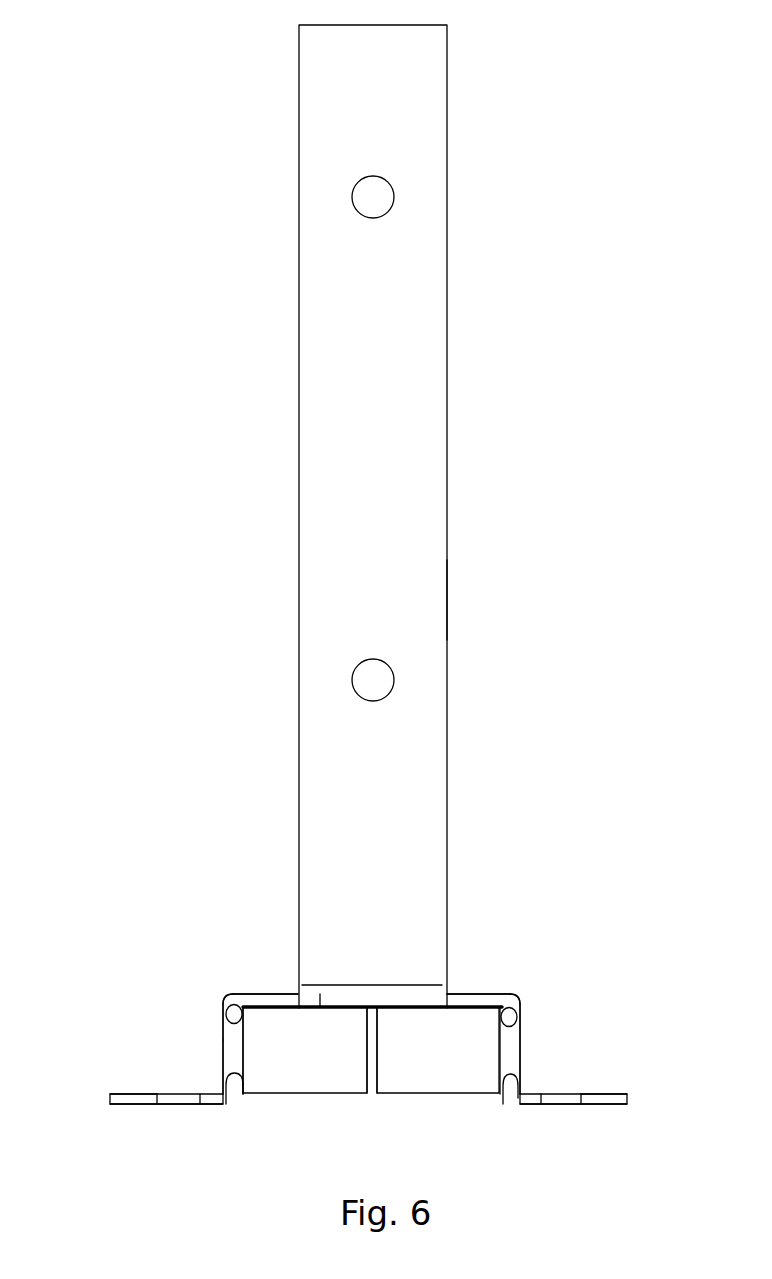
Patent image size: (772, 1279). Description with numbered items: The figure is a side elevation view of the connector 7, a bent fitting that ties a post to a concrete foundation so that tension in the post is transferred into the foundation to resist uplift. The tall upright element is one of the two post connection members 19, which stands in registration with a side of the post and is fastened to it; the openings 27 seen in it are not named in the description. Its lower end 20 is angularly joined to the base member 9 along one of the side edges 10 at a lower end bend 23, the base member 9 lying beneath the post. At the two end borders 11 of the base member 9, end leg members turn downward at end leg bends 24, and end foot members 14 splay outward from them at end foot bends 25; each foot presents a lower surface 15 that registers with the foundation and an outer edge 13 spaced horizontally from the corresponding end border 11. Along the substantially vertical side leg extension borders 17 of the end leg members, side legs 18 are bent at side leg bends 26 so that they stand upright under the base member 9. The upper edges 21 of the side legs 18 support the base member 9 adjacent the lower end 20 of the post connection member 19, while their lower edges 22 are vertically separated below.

The connector 7 is at (452, 440).
The post connection member 19 is at (452, 593).
The holes 27 is at (394, 197).
The lower end 20 is at (394, 990).
The base member 9 is at (492, 996).
The upper edge 21 is at (282, 1007).
The side edge 10 is at (255, 1007).
The end border 11 is at (222, 1001).
The side leg bend 26 is at (222, 1020).
The side leg extension border 17 is at (227, 1048).
The end leg bend 24 is at (245, 1012).
The end foot bend 25 is at (227, 1100).
The lower edge 22 is at (272, 1094).
The lower end bend 23 is at (320, 994).
The side leg 18 is at (393, 1099).
The outer edge 13 is at (110, 1099).
The end foot member 14 is at (132, 1090).
The lower surface 15 is at (133, 1105).